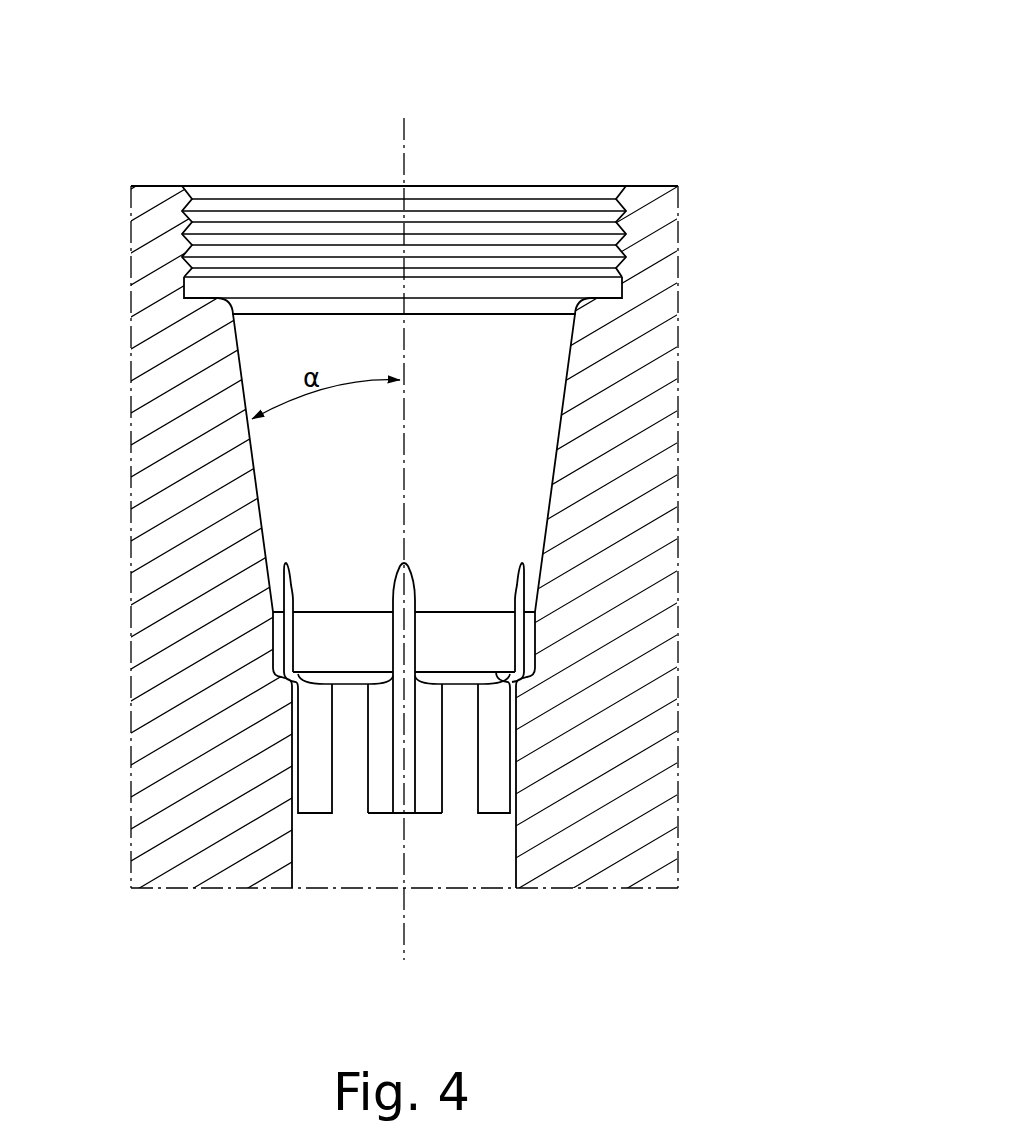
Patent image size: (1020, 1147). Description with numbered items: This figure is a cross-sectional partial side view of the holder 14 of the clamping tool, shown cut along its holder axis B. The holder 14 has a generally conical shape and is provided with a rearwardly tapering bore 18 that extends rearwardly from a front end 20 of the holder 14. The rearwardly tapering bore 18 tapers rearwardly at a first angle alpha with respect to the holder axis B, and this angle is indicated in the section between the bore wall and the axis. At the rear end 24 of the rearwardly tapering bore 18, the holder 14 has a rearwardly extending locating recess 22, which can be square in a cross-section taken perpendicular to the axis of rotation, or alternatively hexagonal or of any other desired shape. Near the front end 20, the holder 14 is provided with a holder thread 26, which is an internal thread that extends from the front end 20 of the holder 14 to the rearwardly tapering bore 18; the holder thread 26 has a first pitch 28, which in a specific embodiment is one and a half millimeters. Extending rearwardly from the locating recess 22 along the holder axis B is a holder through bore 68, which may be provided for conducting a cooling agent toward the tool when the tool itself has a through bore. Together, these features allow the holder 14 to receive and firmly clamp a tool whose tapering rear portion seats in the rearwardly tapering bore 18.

The holder 14 is at (466, 156).
The front end 20 is at (175, 182).
The rearwardly tapering bore 18 is at (565, 397).
The locating recess 22 is at (492, 645).
The rear end 24 is at (530, 607).
The holder thread 26 is at (203, 209).
The first pitch 28 is at (615, 195).
The holder through bore 68 is at (320, 860).
The holder axis B is at (403, 942).